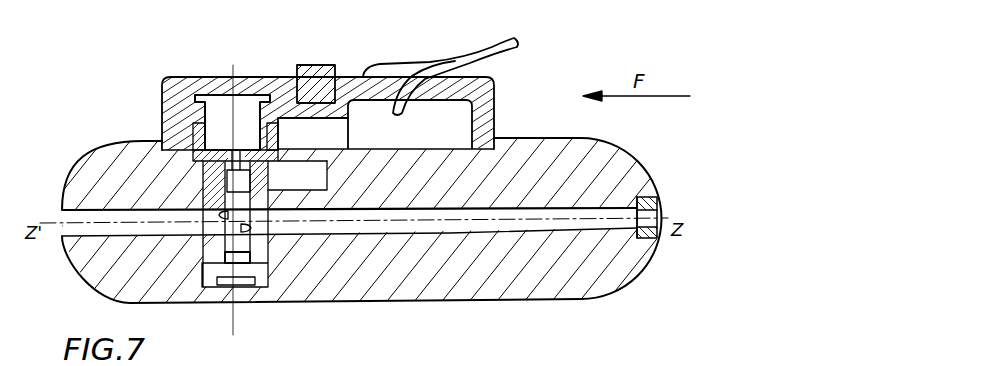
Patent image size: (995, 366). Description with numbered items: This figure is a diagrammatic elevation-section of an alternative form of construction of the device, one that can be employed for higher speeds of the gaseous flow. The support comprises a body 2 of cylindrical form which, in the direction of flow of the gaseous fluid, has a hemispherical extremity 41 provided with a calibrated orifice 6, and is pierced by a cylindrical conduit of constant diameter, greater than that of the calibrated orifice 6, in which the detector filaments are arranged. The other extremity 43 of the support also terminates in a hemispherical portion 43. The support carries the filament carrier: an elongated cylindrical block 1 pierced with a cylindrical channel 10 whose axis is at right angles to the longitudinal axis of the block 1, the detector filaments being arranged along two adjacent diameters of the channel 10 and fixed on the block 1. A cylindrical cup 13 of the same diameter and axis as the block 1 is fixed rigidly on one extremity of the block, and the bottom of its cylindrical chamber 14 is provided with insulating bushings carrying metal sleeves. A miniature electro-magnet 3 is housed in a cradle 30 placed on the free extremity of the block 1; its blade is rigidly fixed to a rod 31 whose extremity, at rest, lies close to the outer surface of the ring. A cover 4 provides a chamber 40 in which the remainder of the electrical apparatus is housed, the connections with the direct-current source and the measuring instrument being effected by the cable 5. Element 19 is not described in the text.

The block 1 is at (200, 209).
The body 2 is at (393, 303).
The electro-magnet 3 is at (252, 128).
The cover 4 is at (202, 80).
The cable 5 is at (483, 45).
The calibrated orifice 6 is at (657, 203).
The cylindrical channel 10 is at (132, 228).
The cylindrical cup 13 is at (268, 273).
The cylindrical chamber 14 is at (230, 289).
The chamber 19 is at (267, 173).
The cradle 30 is at (283, 137).
The rod 31 is at (203, 168).
The chamber 40 is at (473, 123).
The hemispherical extremity 41 is at (652, 186).
The other extremity 43 is at (63, 212).